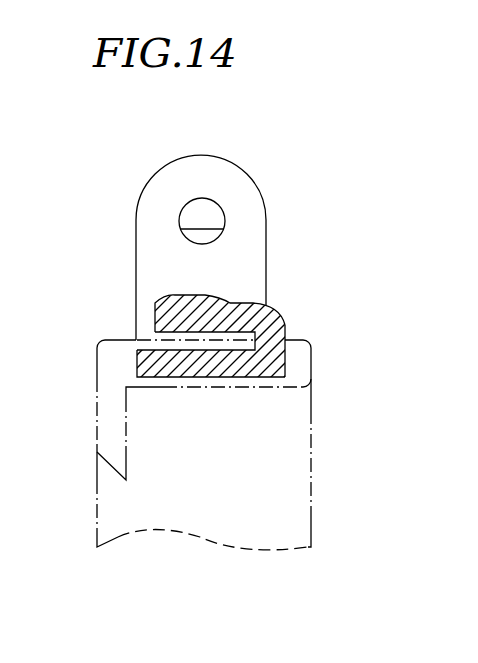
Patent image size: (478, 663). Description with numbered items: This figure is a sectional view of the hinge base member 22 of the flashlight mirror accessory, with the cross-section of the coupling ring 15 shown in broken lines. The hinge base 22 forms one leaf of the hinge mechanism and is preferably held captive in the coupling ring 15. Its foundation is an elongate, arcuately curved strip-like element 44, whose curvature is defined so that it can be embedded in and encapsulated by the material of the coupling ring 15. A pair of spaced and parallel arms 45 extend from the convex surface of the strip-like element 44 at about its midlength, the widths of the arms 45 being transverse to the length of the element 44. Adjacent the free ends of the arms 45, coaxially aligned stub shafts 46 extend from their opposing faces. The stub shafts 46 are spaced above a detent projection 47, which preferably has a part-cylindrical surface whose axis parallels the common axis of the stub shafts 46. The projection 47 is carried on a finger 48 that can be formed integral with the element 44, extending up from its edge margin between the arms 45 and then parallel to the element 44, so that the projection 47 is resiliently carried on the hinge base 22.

The hinge base member 22 is at (302, 203).
The coupling ring 15 is at (313, 363).
The strip-like element 44 is at (222, 365).
The arms 45 is at (136, 235).
The stub shafts 46 is at (200, 215).
The detent projection 47 is at (200, 297).
The finger 48 is at (283, 317).